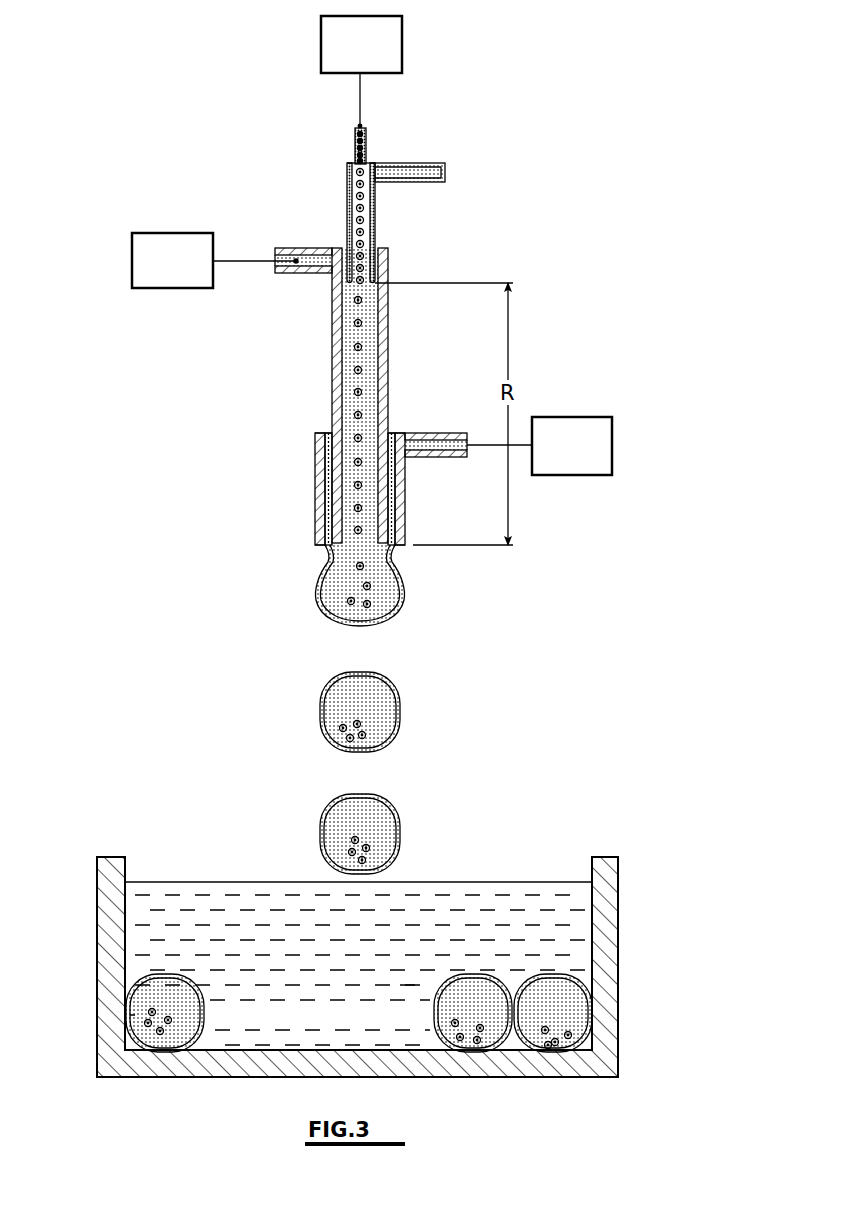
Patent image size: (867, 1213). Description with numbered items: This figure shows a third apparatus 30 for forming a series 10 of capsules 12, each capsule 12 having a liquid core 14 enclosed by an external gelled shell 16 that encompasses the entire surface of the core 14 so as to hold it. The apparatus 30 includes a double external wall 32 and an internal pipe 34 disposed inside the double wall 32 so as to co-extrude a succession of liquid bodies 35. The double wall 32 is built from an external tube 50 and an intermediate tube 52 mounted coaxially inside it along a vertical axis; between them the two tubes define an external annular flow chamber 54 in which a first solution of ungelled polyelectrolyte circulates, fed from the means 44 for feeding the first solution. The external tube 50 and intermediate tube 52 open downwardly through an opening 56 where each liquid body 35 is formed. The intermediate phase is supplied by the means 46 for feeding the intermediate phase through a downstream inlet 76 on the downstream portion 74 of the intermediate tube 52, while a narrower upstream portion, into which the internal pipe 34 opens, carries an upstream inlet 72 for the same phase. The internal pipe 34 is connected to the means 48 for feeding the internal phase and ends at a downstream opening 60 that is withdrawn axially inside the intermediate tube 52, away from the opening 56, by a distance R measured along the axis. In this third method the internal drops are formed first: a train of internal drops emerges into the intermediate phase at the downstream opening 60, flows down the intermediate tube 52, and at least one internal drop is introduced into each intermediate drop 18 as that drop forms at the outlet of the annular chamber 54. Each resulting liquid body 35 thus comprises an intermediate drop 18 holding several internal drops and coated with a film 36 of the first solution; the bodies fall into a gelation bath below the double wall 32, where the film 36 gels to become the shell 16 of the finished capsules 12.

The series of capsules 10 is at (325, 899).
The capsule 12 is at (359, 975).
The liquid core 14 is at (123, 984).
The external gelled shell 16 is at (210, 1005).
The intermediate drop 18 is at (128, 1013).
The apparatus 30 is at (525, 181).
The double external wall 32 is at (304, 497).
The internal pipe 34 is at (355, 152).
The liquid body 35 is at (380, 757).
The film 36 is at (328, 688).
The means for feeding the first solution 44 is at (573, 428).
The means for feeding the intermediate phase 46 is at (170, 238).
The means for feeding the internal phase 48 is at (321, 45).
The external tube 50 is at (405, 540).
The intermediate tube 52 is at (398, 505).
The external annular flow chamber 54 is at (398, 483).
The opening for formation of each liquid body 56 is at (318, 563).
The downstream opening 60 is at (375, 290).
The upstream inlet 72 is at (429, 163).
The downstream portion 74 is at (388, 370).
The downstream inlet 76 is at (300, 276).